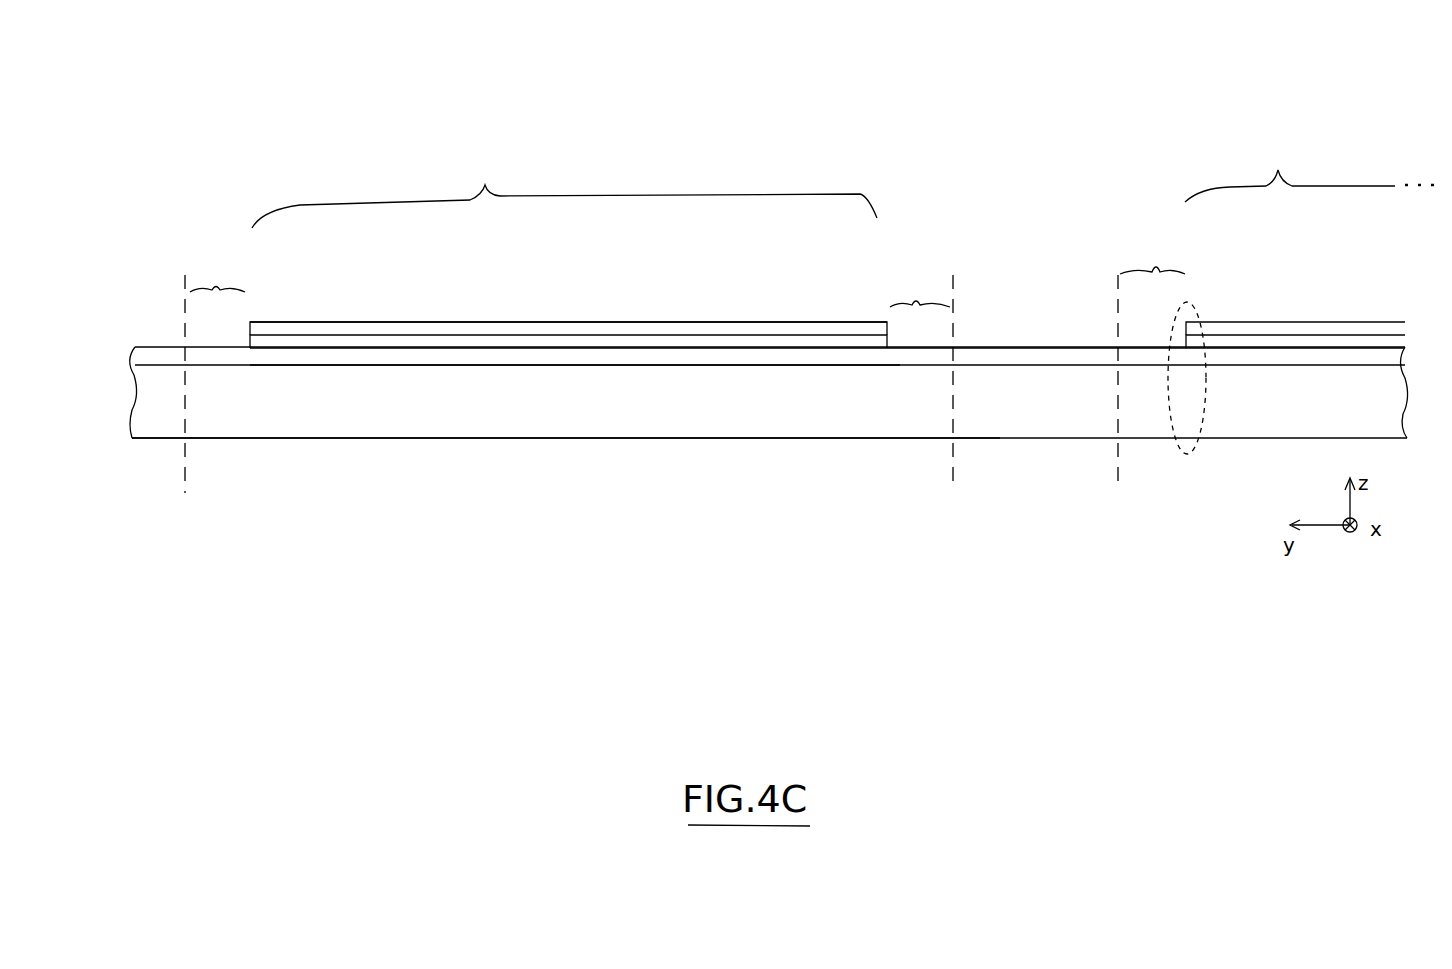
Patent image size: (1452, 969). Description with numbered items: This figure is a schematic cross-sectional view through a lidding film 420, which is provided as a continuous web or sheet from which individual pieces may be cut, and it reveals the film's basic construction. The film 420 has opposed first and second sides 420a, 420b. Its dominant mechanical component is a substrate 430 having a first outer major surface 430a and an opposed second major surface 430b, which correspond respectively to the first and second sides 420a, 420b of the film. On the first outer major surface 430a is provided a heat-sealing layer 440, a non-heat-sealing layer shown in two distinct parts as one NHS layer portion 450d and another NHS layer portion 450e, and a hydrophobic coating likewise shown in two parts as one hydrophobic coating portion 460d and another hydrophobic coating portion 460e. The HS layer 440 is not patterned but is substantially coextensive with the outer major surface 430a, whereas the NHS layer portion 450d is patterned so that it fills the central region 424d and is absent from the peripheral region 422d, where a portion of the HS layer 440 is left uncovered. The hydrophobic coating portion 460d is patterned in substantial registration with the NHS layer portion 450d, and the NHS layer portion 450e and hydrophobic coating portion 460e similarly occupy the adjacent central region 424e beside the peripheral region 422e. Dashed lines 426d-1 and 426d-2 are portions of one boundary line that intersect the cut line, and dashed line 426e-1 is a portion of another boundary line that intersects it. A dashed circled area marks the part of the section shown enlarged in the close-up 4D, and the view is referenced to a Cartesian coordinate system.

The lidding film 420 is at (707, 60).
The first side 420a is at (160, 320).
The second side 420b is at (158, 455).
The peripheral region 422d is at (570, 281).
The peripheral region 422e is at (1153, 252).
The central region 424d is at (564, 190).
The central region 424e is at (1309, 168).
The dashed line 426d-1 is at (185, 284).
The dashed line 426d-2 is at (953, 286).
The dashed line 426e-1 is at (1118, 284).
The substrate 430 is at (745, 414).
The first outer major surface 430a is at (657, 370).
The second major surface 430b is at (870, 429).
The heat-sealing layer 440 is at (998, 358).
The non-heat-sealing layer portion 450d is at (735, 343).
The non-heat-sealing layer portion 450e is at (1302, 340).
The hydrophobic coating portion 460d is at (705, 313).
The hydrophobic coating portion 460e is at (1330, 323).
The close-up region 4D is at (1175, 455).